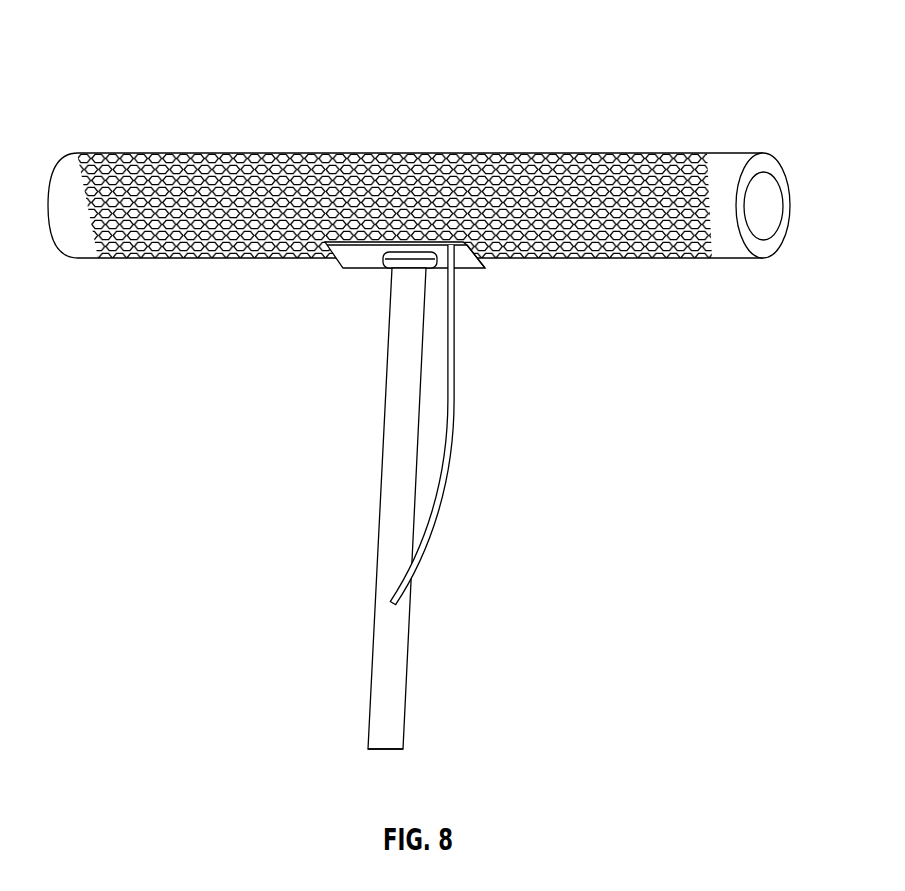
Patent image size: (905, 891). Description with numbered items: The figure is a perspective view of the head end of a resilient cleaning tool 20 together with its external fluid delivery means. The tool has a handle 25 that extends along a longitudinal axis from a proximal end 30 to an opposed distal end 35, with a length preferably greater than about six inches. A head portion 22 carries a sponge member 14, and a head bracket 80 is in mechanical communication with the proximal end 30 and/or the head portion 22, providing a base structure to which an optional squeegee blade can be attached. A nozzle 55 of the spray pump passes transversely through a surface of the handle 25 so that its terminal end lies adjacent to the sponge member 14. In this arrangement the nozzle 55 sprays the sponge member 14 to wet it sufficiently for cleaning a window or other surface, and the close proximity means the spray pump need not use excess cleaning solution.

The resilient cleaning tool 20 is at (136, 59).
The head portion 22 is at (650, 155).
The sponge member 14 is at (757, 203).
The head bracket 80 is at (365, 262).
The proximal end 30 is at (390, 500).
The distal end 35 is at (367, 735).
The nozzle 55 is at (457, 331).
The handle 25 is at (409, 613).